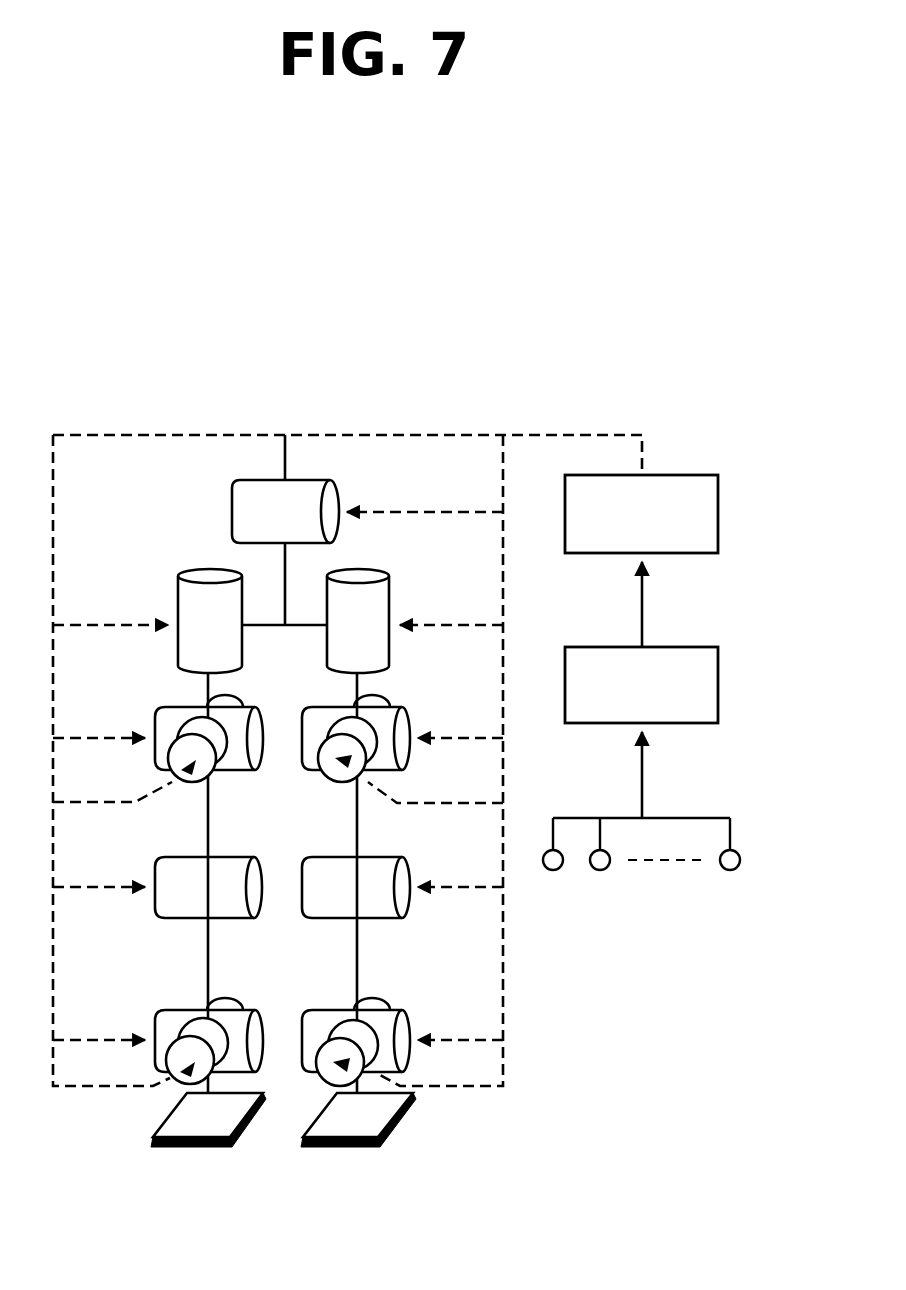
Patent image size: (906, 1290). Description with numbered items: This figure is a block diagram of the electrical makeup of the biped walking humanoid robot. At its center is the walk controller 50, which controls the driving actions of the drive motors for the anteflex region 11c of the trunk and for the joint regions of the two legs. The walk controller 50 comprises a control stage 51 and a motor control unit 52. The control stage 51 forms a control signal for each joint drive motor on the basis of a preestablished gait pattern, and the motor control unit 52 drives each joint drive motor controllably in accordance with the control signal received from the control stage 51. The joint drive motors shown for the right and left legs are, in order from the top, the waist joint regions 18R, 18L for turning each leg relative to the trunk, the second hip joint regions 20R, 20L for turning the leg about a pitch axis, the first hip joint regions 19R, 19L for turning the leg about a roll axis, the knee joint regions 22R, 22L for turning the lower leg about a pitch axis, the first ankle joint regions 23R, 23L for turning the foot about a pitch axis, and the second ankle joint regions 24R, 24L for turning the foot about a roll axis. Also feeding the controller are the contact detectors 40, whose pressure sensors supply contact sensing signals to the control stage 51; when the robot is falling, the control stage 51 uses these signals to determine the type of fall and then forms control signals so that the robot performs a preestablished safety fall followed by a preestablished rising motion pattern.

The walk controller 50 is at (678, 412).
The control stage 51 is at (718, 685).
The motor control unit 52 is at (718, 513).
The contact detector 40 is at (553, 870).
The anteflex region 11c is at (246, 497).
The waist joint region 18R is at (190, 610).
The waist joint region 18L is at (380, 598).
The second hip joint region 20R is at (157, 725).
The second hip joint region 20L is at (408, 718).
The first hip joint region 19R is at (192, 780).
The first hip joint region 19L is at (334, 780).
The knee joint region 22R is at (180, 912).
The knee joint region 22L is at (380, 912).
The first ankle joint region 23R is at (153, 1027).
The first ankle joint region 23L is at (405, 1022).
The second ankle joint region 24R is at (178, 1088).
The second ankle joint region 24L is at (330, 1090).